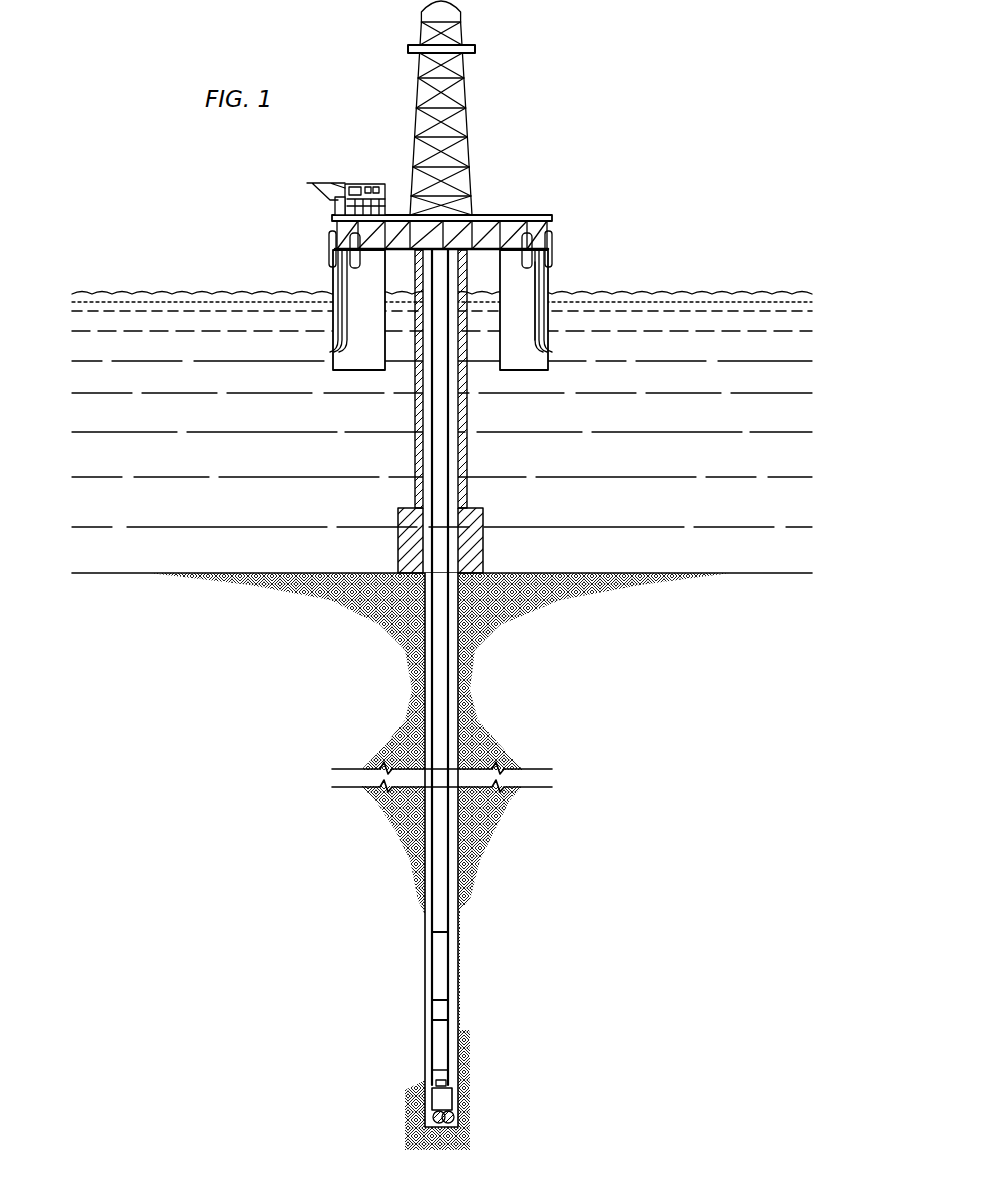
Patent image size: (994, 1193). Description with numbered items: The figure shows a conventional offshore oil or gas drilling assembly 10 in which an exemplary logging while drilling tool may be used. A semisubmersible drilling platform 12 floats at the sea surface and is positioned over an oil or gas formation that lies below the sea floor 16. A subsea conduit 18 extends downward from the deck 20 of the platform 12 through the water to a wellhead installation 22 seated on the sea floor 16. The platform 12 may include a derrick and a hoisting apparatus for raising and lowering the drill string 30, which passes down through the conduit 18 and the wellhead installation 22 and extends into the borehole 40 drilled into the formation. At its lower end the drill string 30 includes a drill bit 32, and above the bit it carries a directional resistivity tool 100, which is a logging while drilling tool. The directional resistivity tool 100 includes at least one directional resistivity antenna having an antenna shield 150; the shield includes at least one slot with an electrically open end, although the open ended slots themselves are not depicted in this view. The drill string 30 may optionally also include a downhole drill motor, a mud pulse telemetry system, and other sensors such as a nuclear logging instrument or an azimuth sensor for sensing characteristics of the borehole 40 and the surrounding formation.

The offshore oil or gas drilling assembly 10 is at (531, 114).
The semisubmersible drilling platform 12 is at (540, 216).
The sea floor 16 is at (686, 573).
The subsea conduit 18 is at (468, 456).
The deck 20 is at (524, 265).
The wellhead installation 22 is at (482, 509).
The drill string 30 is at (441, 398).
The drill bit 32 is at (456, 1121).
The borehole 40 is at (456, 683).
The directional resistivity tool 100 is at (433, 960).
The antenna shield 150 is at (440, 1009).